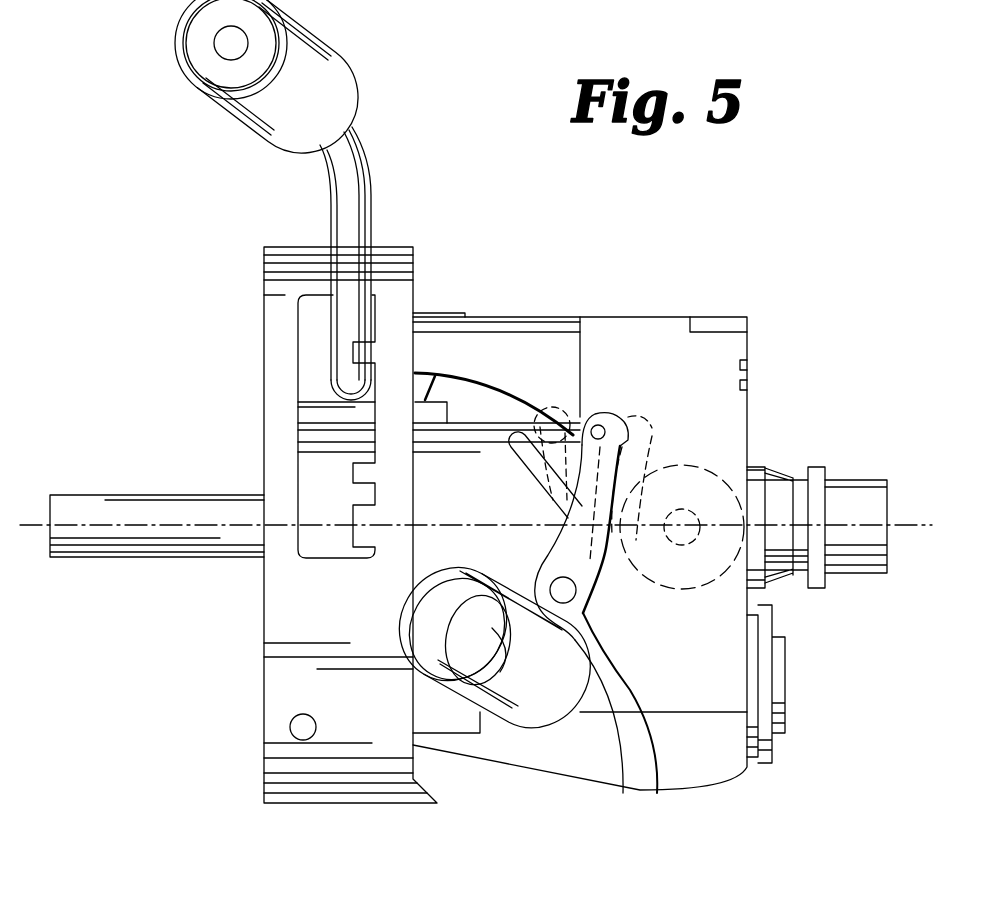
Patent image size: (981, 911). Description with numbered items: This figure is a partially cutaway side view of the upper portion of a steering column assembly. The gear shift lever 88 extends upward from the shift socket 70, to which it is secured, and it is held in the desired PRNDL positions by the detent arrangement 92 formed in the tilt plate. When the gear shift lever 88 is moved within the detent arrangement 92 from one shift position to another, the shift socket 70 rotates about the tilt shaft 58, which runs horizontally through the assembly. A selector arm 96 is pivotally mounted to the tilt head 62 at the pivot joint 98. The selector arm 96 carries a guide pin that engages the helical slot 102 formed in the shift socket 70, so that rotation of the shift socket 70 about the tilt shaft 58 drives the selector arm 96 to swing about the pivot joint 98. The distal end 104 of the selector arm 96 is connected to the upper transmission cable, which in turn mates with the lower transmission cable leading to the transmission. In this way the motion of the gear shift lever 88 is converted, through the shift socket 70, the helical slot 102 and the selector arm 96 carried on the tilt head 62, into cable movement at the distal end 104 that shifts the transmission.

The tilt shaft 58 is at (122, 495).
The tilt head 62 is at (713, 790).
The shift socket 70 is at (482, 423).
The gear shift lever 88 is at (372, 188).
The detent arrangement 92 is at (373, 535).
The selector arm 96 is at (657, 793).
The pivot joint 98 is at (623, 793).
The helical slot 102 is at (525, 437).
The distal end 104 is at (598, 414).